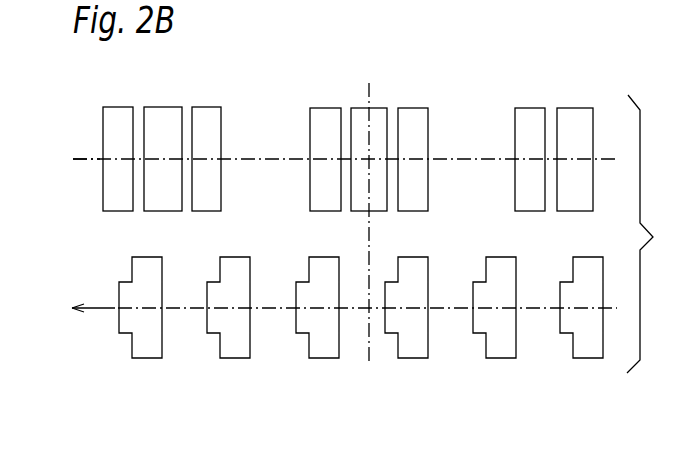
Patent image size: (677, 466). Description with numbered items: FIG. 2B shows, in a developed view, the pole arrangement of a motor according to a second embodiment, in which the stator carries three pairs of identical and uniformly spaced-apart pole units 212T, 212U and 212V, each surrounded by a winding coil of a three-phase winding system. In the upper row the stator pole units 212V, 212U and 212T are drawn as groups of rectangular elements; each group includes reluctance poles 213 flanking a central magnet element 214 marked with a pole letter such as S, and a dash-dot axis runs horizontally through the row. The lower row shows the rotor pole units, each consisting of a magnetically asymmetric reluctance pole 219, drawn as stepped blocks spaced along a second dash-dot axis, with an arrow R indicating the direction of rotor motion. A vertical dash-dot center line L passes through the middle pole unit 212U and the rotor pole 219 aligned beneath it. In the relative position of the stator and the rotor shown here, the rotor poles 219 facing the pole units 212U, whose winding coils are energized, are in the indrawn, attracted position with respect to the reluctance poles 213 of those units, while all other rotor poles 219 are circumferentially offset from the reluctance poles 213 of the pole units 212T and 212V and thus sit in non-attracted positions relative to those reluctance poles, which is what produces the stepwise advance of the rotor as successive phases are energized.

The stator pole unit 212V is at (175, 97).
The stator pole unit 212U is at (360, 95).
The stator pole unit 212T is at (572, 98).
The reluctance pole 213 is at (325, 115).
The center magnet 214 is at (378, 115).
The magnetically asymmetric reluctance pole 219 is at (507, 267).
The south pole / magnetic axis S is at (98, 157).
The rotation direction R is at (103, 307).
The center line L is at (367, 363).